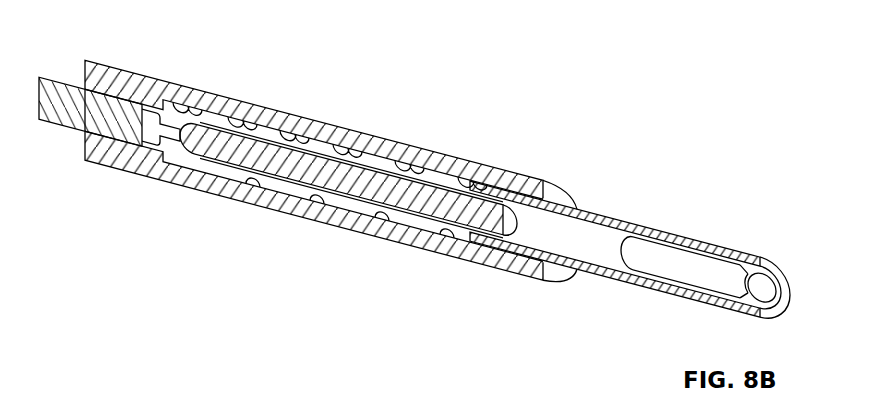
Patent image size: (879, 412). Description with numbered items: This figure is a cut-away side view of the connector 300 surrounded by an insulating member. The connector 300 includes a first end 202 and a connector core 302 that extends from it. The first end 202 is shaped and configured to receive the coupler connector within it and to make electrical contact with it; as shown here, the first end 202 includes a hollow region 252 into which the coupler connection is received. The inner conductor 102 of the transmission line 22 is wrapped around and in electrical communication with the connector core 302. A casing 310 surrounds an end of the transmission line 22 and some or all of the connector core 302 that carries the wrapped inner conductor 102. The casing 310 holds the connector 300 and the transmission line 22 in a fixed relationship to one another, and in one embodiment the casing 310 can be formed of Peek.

The transmission line 22 is at (56, 75).
The inner conductor 102 is at (168, 155).
The first end 202 is at (677, 238).
The hollow region 252 is at (583, 262).
The connector 300 is at (340, 253).
The connector core 302 is at (213, 152).
The casing 310 is at (270, 96).